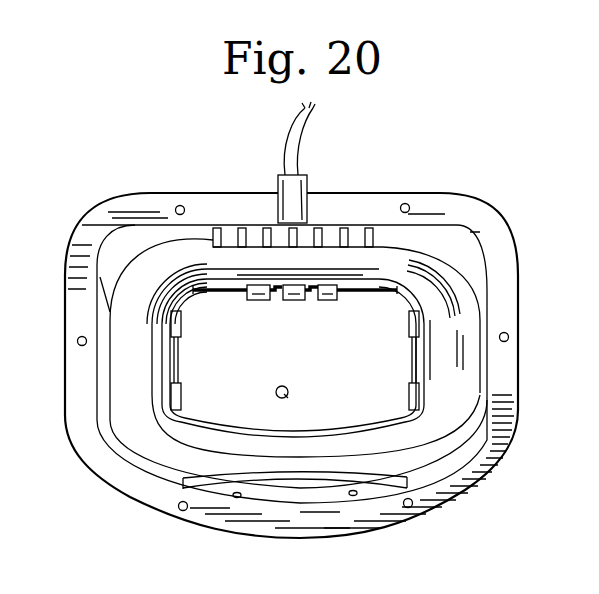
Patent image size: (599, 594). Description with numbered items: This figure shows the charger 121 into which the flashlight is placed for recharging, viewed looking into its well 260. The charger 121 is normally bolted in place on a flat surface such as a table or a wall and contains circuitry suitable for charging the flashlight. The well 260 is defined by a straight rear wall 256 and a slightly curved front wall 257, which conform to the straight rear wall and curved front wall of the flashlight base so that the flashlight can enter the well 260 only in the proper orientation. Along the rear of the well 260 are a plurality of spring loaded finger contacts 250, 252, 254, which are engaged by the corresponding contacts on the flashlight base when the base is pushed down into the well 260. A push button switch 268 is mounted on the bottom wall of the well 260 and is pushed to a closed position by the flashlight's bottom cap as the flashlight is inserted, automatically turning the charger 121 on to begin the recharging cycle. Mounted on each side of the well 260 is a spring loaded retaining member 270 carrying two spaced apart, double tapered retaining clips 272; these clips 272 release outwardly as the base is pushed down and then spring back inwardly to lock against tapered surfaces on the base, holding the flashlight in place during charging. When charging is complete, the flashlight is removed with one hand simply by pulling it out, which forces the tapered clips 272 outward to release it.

The charger 121 is at (113, 184).
The spring loaded retaining member 270 is at (199, 293).
The well 260 is at (326, 376).
The front wall 257 is at (278, 434).
The rear wall 256 is at (357, 293).
The finger contact 254 is at (260, 300).
The finger contact 252 is at (291, 302).
The finger contact 250 is at (324, 301).
The retaining clip 272 is at (181, 352).
The push button switch 268 is at (288, 398).